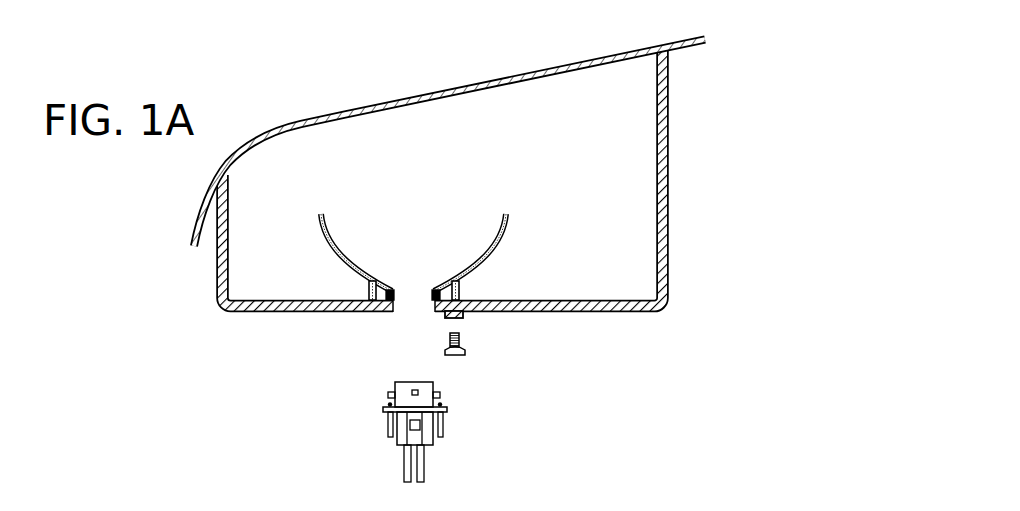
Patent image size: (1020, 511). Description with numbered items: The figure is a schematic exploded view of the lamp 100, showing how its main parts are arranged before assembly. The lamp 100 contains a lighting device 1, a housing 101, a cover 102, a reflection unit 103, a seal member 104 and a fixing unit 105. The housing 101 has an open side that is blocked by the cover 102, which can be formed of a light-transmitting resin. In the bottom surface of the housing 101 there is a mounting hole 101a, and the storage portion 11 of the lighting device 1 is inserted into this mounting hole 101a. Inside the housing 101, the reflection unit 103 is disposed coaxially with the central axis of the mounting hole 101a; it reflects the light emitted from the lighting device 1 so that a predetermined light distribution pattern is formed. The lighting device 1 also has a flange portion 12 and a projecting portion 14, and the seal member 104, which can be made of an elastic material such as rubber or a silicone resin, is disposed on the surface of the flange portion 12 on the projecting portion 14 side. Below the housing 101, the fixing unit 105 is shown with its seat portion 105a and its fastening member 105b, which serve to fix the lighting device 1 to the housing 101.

The lamp 100 is at (737, 73).
The housing 101 is at (668, 222).
The mounting hole 101a is at (433, 306).
The cover 102 is at (345, 110).
The reflection unit 103 is at (335, 244).
The fixing unit 105 is at (659, 323).
The seat portion 105a is at (466, 318).
The fastening member 105b is at (470, 347).
The lighting device 1 is at (458, 422).
The storage portion 11 is at (388, 395).
The flange portion 12 is at (383, 410).
The projecting portion 14 is at (440, 393).
The seal member 104 is at (447, 406).